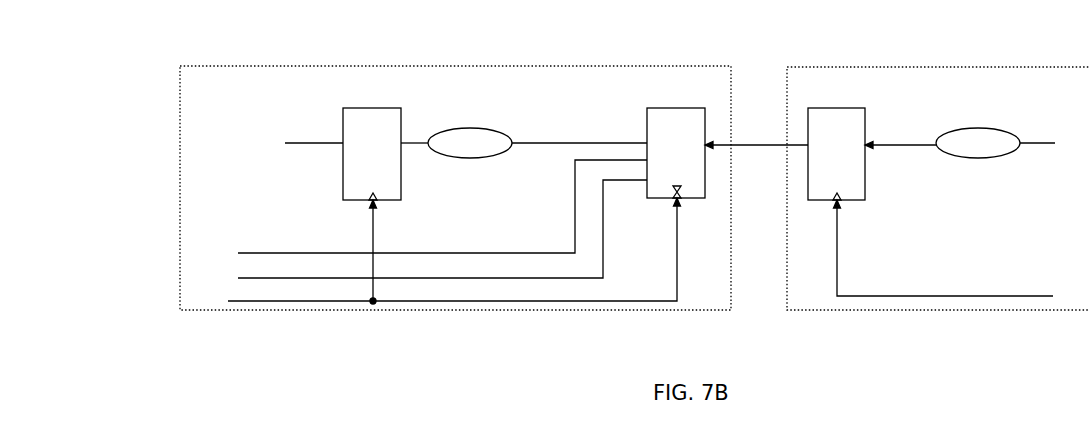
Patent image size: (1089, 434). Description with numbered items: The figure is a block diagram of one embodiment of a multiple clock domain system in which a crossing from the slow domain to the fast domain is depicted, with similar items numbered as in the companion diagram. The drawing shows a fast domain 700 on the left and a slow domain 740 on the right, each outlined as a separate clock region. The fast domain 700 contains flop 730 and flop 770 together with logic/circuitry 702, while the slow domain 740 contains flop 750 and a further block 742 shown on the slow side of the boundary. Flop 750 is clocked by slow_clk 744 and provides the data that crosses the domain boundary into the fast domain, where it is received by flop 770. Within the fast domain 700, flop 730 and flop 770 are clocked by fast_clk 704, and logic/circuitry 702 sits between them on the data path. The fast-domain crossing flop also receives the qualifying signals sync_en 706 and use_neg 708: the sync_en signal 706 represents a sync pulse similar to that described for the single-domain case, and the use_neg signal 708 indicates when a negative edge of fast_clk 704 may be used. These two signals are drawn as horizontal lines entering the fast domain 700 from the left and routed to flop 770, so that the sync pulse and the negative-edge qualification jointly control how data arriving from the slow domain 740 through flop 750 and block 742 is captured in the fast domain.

The fast domain 700 is at (457, 66).
The slow domain 740 is at (968, 67).
The flop 730 is at (372, 154).
The logic/circuitry 702 is at (470, 143).
The flop 770 is at (676, 153).
The flop 750 is at (836, 154).
The data signal 742 is at (978, 143).
The slow_clk 744 is at (1013, 296).
The fast_clk 704 is at (390, 301).
The sync_en signal 706 is at (420, 278).
The use_neg signal 708 is at (447, 253).